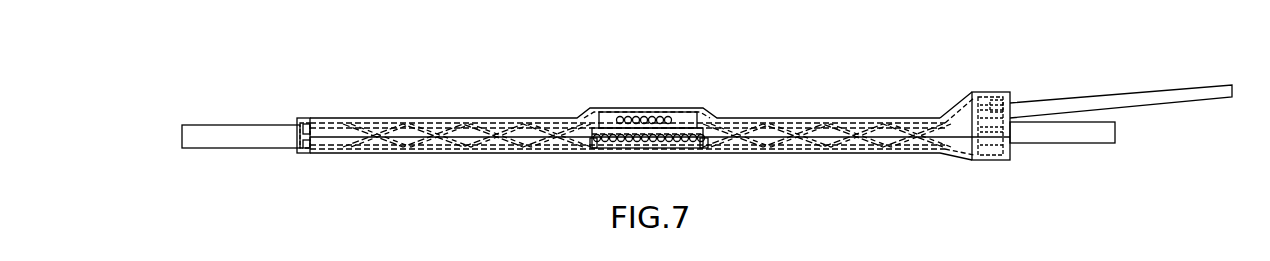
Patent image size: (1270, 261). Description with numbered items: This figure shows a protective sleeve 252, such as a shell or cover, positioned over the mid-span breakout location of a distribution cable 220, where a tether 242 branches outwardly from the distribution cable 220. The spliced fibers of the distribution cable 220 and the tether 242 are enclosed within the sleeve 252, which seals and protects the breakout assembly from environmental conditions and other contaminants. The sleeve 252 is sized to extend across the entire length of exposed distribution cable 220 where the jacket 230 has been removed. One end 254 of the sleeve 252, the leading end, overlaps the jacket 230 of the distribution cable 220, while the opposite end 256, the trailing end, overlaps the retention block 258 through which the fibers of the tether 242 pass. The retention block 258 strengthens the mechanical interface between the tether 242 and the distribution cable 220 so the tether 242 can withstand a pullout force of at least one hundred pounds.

The distribution cable 220 is at (210, 132).
The jacket 230 is at (303, 150).
The tether 242 is at (1123, 98).
The protective sleeve 252 is at (740, 118).
The one end of the sleeve 254 is at (307, 118).
The opposite end of the sleeve 256 is at (980, 163).
The retention block 258 is at (978, 100).